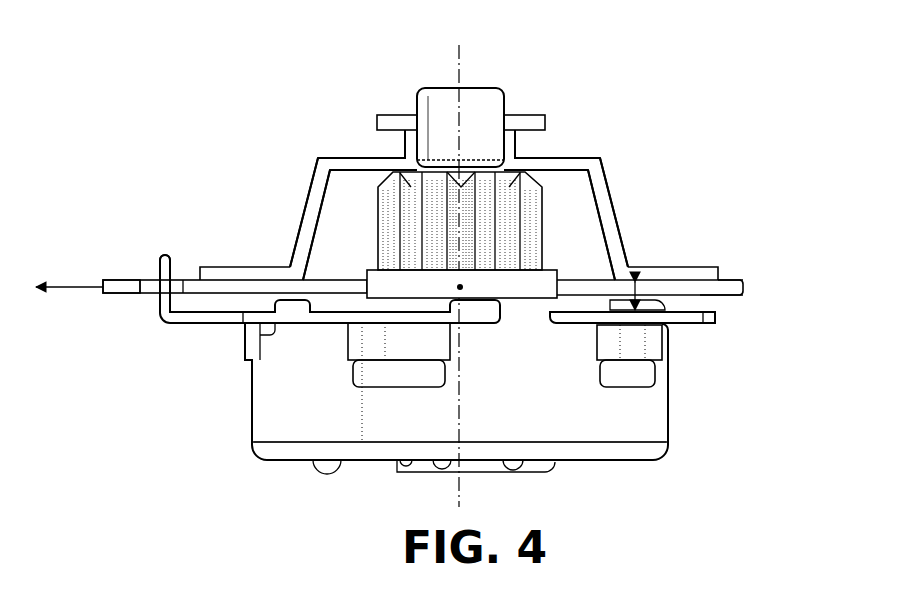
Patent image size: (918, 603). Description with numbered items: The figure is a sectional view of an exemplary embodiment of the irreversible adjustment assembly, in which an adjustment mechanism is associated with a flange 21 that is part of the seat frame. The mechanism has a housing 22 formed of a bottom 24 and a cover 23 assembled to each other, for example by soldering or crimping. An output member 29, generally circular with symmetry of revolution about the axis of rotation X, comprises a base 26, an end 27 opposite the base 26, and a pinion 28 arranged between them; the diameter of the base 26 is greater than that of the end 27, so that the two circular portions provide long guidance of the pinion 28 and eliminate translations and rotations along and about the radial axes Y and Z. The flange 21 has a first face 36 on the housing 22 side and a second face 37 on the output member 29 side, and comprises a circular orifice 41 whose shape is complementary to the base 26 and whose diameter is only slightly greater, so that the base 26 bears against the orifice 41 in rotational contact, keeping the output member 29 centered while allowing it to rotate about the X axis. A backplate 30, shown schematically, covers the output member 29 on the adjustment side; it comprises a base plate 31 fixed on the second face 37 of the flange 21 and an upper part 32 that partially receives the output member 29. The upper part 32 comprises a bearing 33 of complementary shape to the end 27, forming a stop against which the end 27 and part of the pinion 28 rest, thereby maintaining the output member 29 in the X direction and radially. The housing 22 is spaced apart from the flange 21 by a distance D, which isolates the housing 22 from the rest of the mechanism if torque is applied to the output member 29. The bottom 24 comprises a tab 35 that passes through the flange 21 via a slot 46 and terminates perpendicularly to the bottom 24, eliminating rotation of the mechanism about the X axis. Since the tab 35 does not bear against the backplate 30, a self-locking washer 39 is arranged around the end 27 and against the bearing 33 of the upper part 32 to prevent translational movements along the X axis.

The flange 21 is at (745, 283).
The housing 22 is at (698, 399).
The cover 23 is at (635, 443).
The bottom 24 is at (200, 327).
The base 26 is at (535, 283).
The end 27 is at (480, 90).
The pinion 28 is at (527, 230).
The output member 29 is at (366, 217).
The backplate 30 is at (610, 207).
The base plate 31 is at (700, 270).
The upper part 32 is at (583, 165).
The bearing 33 is at (405, 145).
The tab 35 is at (157, 268).
The first face 36 is at (735, 297).
The second face 37 is at (733, 278).
The self-locking washer 39 is at (530, 122).
The orifice 41 is at (363, 273).
The slot 46 is at (176, 283).
The axis of rotation X is at (456, 62).
The radial axis Y is at (65, 268).
The radial axis Z is at (475, 287).
The distance D is at (637, 300).